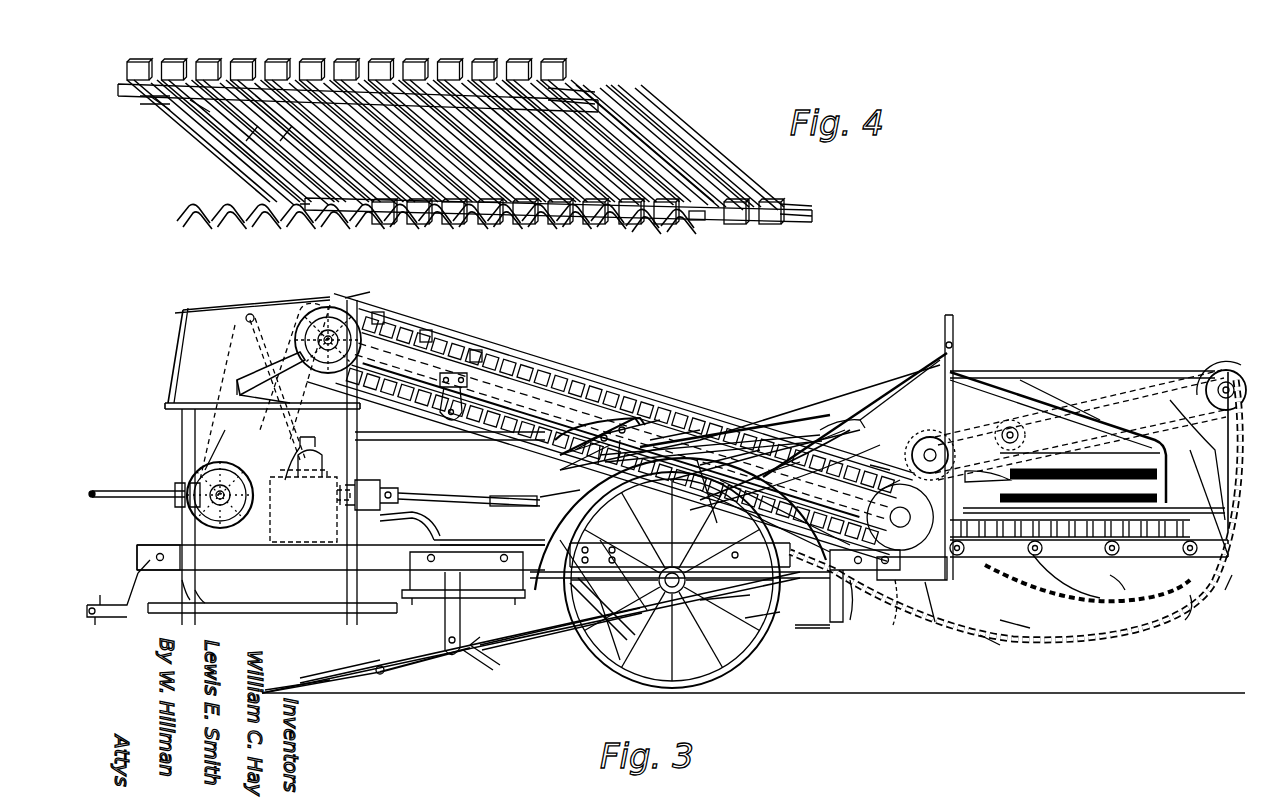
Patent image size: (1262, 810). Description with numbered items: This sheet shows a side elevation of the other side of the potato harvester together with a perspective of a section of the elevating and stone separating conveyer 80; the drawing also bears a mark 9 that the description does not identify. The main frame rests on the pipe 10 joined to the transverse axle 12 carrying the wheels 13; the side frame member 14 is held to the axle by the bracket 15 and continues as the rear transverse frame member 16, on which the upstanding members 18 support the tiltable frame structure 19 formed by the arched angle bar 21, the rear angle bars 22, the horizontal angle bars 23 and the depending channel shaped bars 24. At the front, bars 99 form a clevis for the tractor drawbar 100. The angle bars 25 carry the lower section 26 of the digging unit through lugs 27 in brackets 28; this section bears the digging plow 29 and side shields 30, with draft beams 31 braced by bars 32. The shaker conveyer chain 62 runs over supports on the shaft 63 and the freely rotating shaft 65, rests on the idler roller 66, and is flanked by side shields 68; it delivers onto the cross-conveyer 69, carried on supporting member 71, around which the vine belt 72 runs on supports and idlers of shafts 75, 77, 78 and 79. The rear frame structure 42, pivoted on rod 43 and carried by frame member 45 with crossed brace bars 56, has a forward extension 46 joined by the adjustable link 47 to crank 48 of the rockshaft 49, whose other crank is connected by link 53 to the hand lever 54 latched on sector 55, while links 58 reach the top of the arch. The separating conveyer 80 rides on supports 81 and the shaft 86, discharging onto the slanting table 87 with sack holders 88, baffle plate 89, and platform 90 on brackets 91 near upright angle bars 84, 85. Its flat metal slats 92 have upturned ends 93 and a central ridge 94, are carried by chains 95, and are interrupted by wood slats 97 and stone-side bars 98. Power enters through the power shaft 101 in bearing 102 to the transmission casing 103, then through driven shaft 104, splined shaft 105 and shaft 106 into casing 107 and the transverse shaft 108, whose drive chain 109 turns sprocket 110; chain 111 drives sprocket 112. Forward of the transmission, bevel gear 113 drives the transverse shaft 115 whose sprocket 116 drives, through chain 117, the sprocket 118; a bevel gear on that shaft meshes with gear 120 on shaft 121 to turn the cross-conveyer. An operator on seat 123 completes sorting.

In FIG. 3, the rear frame member 9 is at (1234, 588).
In FIG. 3, the pipe 10 is at (135, 568).
In FIG. 3, the transverse axle 12 is at (712, 632).
In FIG. 3, the wheels 13 is at (810, 635).
In FIG. 3, the side frame member 14 is at (400, 615).
In FIG. 3, the bracket 15 is at (762, 623).
In FIG. 3, the rear transverse frame member 16 is at (1198, 605).
In FIG. 3, the upstanding members 18 is at (930, 625).
In FIG. 3, the frame structure 19 is at (332, 306).
In FIG. 3, the arched angle bar 21 is at (952, 322).
In FIG. 3, the angle bars 22 is at (1190, 420).
In FIG. 3, the horizontally extending angle bars 23 is at (1140, 372).
In FIG. 3, the channel shaped bars 24 is at (1090, 390).
In FIG. 3, the angle bars 25 is at (530, 645).
In FIG. 3, the lower section of the digging unit 26 is at (340, 672).
In FIG. 3, the lugs 27 is at (620, 635).
In FIG. 3, the brackets 28 is at (595, 680).
In FIG. 3, the digging plow 29 is at (300, 683).
In FIG. 3, the side shields 30 is at (400, 675).
In FIG. 3, the beams 31 is at (445, 525).
In FIG. 3, the bars 32 is at (470, 545).
In FIG. 3, the frame structure 42 is at (1058, 548).
In FIG. 3, the rod 43 is at (960, 560).
In FIG. 3, the frame member 45 is at (740, 450).
In FIG. 3, the forward extension 46 is at (840, 418).
In FIG. 3, the manually adjustable link 47 is at (760, 470).
In FIG. 3, the crank 48 is at (790, 575).
In FIG. 3, the transverse rockshaft 49 is at (680, 524).
In FIG. 3, the link 53 is at (648, 418).
In FIG. 3, the hand lever 54 is at (755, 425).
In FIG. 3, the sector 55 is at (690, 440).
In FIG. 3, the brace bars 56 is at (648, 615).
In FIG. 3, the links 58 is at (880, 395).
In FIG. 3, the shaker conveyer chain 62 is at (540, 660).
In FIG. 3, the shaft 63 is at (1025, 380).
In FIG. 3, the freely rotating shaft 65 is at (440, 690).
In FIG. 3, the idler roller 66 is at (480, 668).
In FIG. 3, the side shields 68 is at (895, 395).
In FIG. 3, the cross-conveyer 69 is at (1094, 481).
In FIG. 3, the rotatable supporting member 71 is at (1204, 489).
In FIG. 3, the belt 72 is at (1105, 600).
In FIG. 3, the shaft 75 is at (1242, 378).
In FIG. 3, the shaft 77 is at (860, 620).
In FIG. 3, the shaft 78 is at (901, 619).
In FIG. 3, the shaft 79 is at (1018, 436).
In FIG. 4, the separating conveyer 80 is at (595, 108).
In FIG. 3, the separating conveyer 80 is at (440, 350).
In FIG. 3, the supports 81 is at (1065, 600).
In FIG. 3, the upright angle bar 84 is at (400, 482).
In FIG. 3, the upright angle bar 85 is at (265, 391).
In FIG. 3, the shaft 86 is at (365, 312).
In FIG. 3, the slanting table 87 is at (222, 310).
In FIG. 3, the sack holders 88 is at (298, 450).
In FIG. 3, the baffle plate 89 is at (237, 388).
In FIG. 3, the platform 90 is at (345, 612).
In FIG. 3, the brackets 91 is at (350, 582).
In FIG. 4, the flat metal slats 92 is at (215, 120).
In FIG. 3, the flat metal slats 92 is at (490, 357).
In FIG. 4, the upturned ends 93 is at (128, 78).
In FIG. 3, the upturned ends 93 is at (420, 337).
In FIG. 4, the upstanding ridge 94 is at (282, 128).
In FIG. 4, the chains 95 is at (170, 105).
In FIG. 3, the chains 95 is at (1015, 615).
In FIG. 4, the wood slats 97 is at (496, 218).
In FIG. 4, the wood slats or bars 98 is at (697, 220).
In FIG. 3, the bars 99 is at (135, 583).
In FIG. 3, the drawbar 100 is at (190, 616).
In FIG. 3, the power shaft 101 is at (100, 495).
In FIG. 3, the supporting bearing 102 is at (120, 496).
In FIG. 3, the variable speed transmission casing 103 is at (282, 520).
In FIG. 3, the driven shaft 104 is at (380, 483).
In FIG. 3, the splined shaft 105 is at (540, 470).
In FIG. 3, the shaft 106 is at (520, 496).
In FIG. 3, the casing 107 is at (735, 605).
In FIG. 3, the transversely extending shaft 108 is at (672, 425).
In FIG. 3, the drive chain 109 is at (862, 430).
In FIG. 3, the sprocket 110 is at (927, 437).
In FIG. 3, the chain 111 is at (1040, 395).
In FIG. 3, the sprocket 112 is at (1218, 372).
In FIG. 3, the bevel gear 113 is at (178, 488).
In FIG. 3, the transverse shaft 115 is at (200, 580).
In FIG. 3, the sprocket 116 is at (228, 470).
In FIG. 3, the chain 117 is at (220, 455).
In FIG. 3, the sprocket 118 is at (352, 402).
In FIG. 3, the gear 120 is at (392, 312).
In FIG. 3, the shaft 121 is at (881, 472).
In FIG. 3, the seat 123 is at (560, 452).